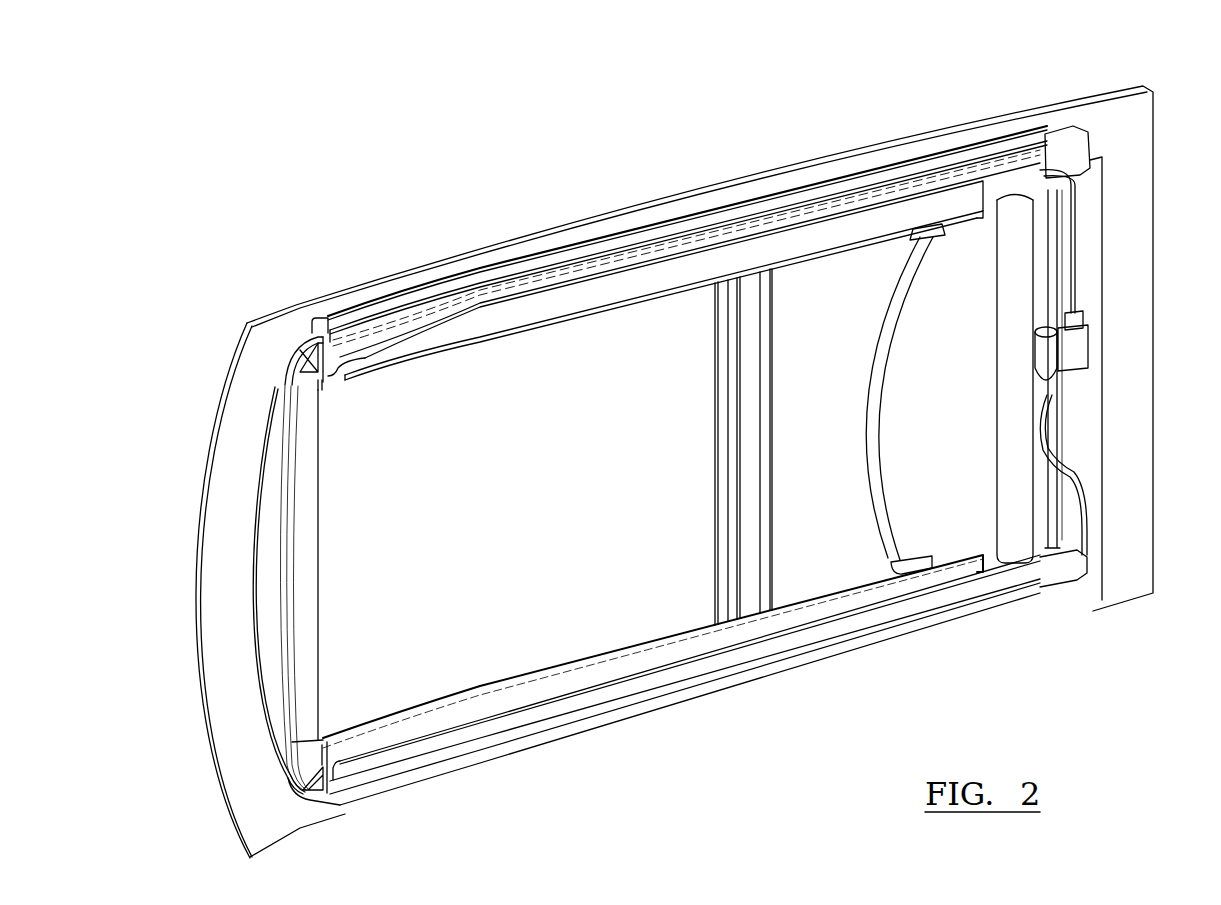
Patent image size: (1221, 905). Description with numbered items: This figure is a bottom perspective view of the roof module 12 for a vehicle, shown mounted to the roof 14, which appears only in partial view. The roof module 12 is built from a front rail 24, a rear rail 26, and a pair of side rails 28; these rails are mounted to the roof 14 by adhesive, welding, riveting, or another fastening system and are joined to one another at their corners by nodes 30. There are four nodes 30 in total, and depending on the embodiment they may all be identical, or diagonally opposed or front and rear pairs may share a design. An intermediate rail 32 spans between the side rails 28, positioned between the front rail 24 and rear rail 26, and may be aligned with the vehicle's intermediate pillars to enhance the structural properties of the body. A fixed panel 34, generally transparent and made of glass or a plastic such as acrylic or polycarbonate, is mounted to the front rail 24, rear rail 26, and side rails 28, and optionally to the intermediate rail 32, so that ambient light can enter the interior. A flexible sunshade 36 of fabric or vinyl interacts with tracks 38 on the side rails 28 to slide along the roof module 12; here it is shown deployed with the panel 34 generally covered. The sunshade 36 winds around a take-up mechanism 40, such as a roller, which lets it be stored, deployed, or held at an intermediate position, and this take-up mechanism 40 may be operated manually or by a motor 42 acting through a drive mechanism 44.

The roof module 12 is at (572, 141).
The roof 14 is at (1123, 125).
The front rail 24 is at (307, 463).
The rear rail 26 is at (1077, 422).
The side rails 28 is at (900, 212).
The nodes 30 is at (290, 340).
The intermediate rail 32 is at (755, 540).
The fixed panel 34 is at (645, 620).
The sunshade 36 is at (945, 547).
The tracks 38 is at (320, 742).
The take-up mechanism 40 is at (1022, 550).
The motor 42 is at (1077, 348).
The drive mechanism 44 is at (1072, 470).